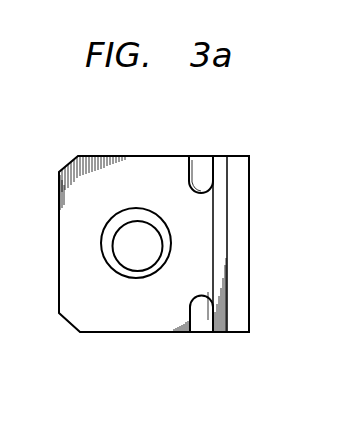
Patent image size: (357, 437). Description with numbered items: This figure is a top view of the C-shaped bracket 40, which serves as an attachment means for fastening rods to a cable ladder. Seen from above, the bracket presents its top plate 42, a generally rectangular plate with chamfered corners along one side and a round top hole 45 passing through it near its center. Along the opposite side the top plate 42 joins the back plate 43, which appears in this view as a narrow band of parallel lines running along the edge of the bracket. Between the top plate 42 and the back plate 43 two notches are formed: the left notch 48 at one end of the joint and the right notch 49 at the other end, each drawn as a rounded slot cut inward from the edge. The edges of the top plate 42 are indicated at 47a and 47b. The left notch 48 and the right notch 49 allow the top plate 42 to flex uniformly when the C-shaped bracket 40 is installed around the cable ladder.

The C-shaped bracket 40 is at (76, 131).
The top plate 42 is at (127, 156).
The back plate 43 is at (250, 252).
The top hole 45 is at (124, 214).
The upper cutting edge 47a is at (155, 156).
The lower cutting edge 47b is at (136, 332).
The left notch 48 is at (193, 165).
The right notch 49 is at (192, 318).